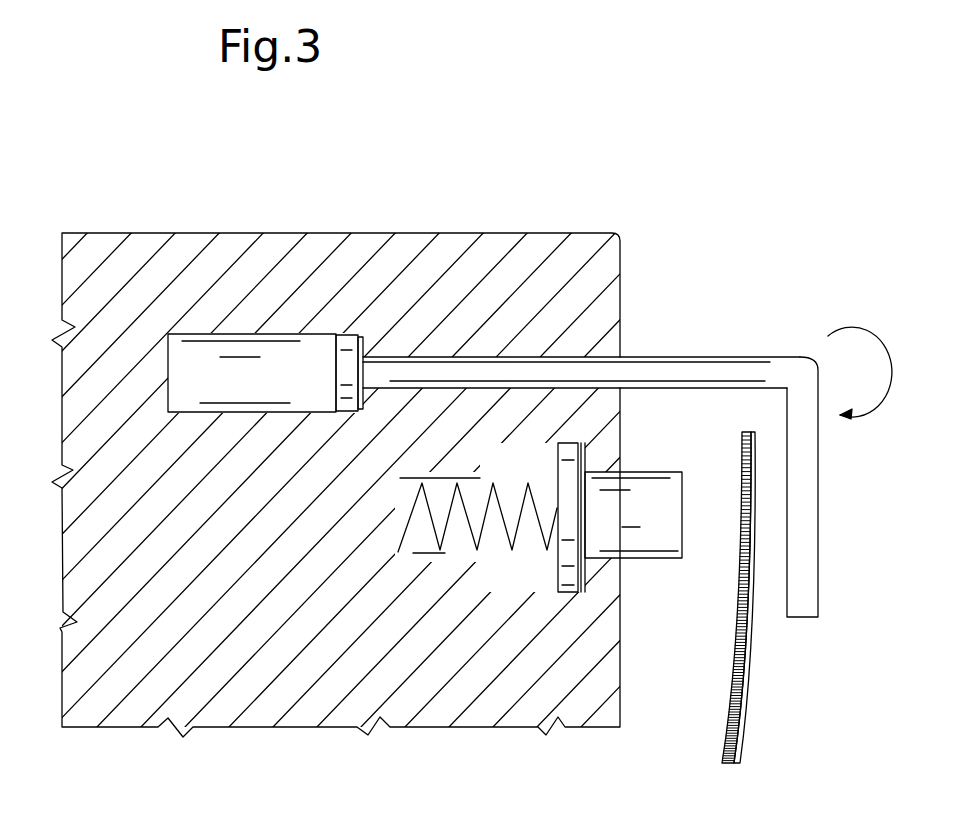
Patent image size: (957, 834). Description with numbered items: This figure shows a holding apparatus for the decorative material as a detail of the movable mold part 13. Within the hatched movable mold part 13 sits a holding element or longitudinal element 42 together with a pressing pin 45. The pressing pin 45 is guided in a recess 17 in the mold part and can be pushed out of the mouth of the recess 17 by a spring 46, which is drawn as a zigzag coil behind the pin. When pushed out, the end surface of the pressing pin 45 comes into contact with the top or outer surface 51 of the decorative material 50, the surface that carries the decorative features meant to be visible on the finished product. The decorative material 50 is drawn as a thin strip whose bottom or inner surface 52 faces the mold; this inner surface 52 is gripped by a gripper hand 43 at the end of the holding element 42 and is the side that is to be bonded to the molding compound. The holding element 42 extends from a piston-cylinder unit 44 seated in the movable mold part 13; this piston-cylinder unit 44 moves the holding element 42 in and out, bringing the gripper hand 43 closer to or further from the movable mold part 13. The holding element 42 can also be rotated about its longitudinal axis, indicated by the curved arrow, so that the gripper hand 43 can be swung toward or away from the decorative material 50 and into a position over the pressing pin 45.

The movable mold part 13 is at (103, 287).
The piston-cylinder unit 44 is at (235, 333).
The holding element 42 is at (431, 368).
The gripper hand 43 is at (805, 478).
The recess 17 is at (538, 455).
The pressing pin 45 is at (661, 490).
The spring 46 is at (478, 538).
The decorative material 50 is at (739, 604).
The outer surface 51 is at (727, 720).
The inner surface 52 is at (753, 665).